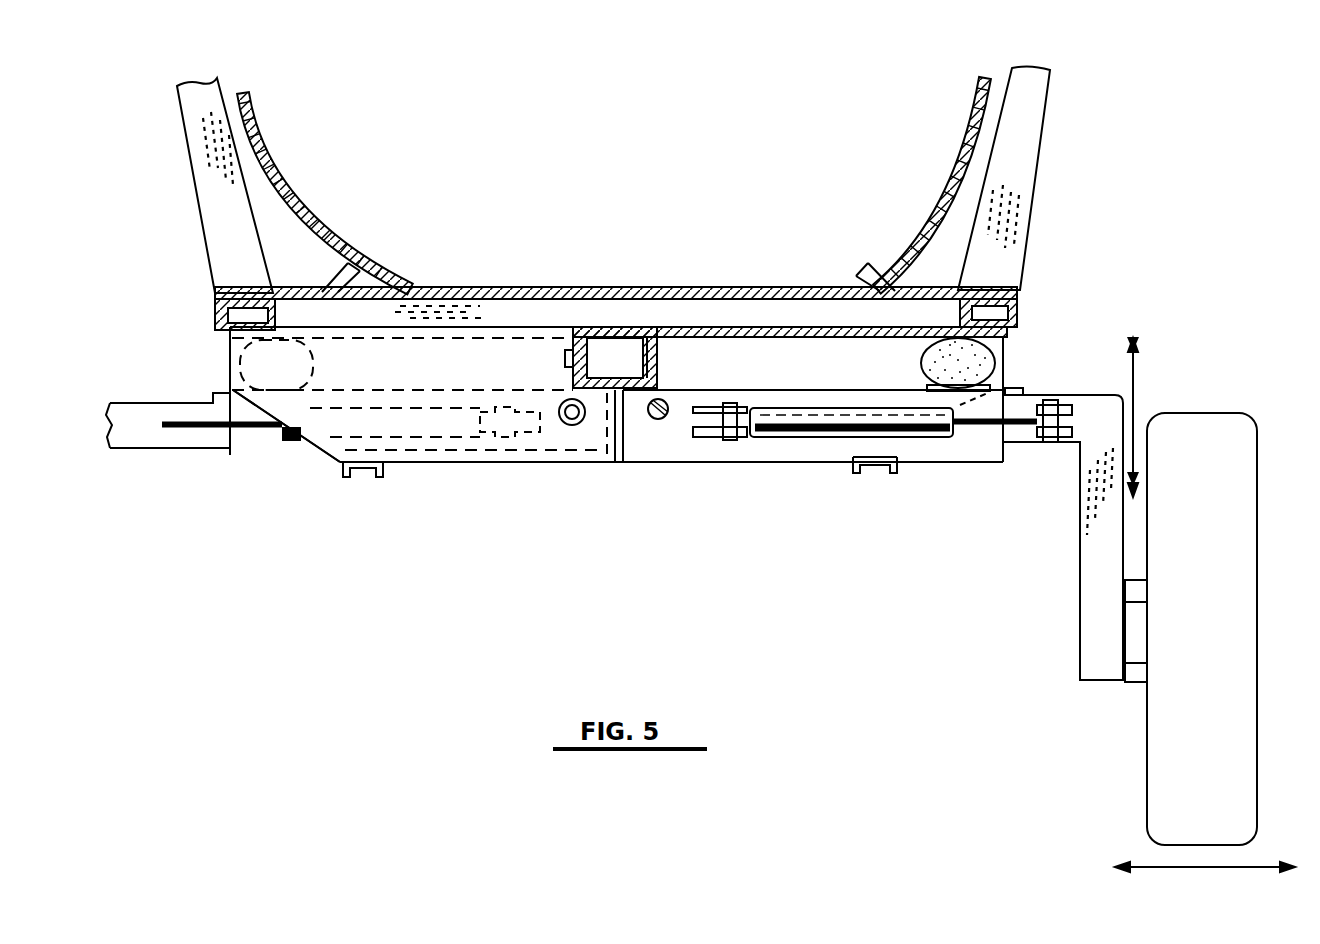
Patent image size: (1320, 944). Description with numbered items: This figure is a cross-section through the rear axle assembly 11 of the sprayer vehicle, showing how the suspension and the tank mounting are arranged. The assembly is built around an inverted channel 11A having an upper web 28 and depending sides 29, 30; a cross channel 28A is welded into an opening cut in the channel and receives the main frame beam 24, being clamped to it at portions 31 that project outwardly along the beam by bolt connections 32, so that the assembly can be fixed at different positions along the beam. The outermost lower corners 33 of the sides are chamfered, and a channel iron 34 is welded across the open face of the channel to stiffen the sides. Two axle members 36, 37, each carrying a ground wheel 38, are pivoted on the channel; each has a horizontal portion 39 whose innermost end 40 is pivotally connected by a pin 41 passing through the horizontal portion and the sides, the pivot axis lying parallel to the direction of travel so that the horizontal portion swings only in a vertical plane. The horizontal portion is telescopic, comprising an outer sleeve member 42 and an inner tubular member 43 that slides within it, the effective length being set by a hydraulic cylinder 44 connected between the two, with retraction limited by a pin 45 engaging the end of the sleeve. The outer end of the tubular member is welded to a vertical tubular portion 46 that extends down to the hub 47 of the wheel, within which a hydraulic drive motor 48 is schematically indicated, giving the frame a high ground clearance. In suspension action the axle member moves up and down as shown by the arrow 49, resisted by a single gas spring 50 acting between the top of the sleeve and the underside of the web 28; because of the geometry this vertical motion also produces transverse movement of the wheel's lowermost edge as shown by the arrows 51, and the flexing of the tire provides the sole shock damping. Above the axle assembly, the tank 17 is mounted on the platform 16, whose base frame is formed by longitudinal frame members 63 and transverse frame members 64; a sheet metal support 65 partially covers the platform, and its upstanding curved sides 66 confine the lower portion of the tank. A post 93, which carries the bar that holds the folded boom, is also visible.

The rear axle assembly 11 is at (711, 540).
The inverted channel 11A is at (417, 469).
The platform 16 is at (1022, 280).
The tank 17 is at (990, 92).
The beam 24 is at (610, 327).
The upper web 28 is at (716, 325).
The cross channel 28A is at (657, 360).
The side 29 is at (827, 348).
The side 30 is at (450, 445).
The portions 31 is at (565, 352).
The bolt connections 32 is at (565, 362).
The lower corners 33 is at (300, 450).
The channel iron 34 is at (862, 473).
The axle member 36 is at (1003, 448).
The axle member 37 is at (224, 463).
The ground wheel 38 is at (1224, 442).
The horizontal portion 39 is at (977, 462).
The innermost end 40 is at (640, 437).
The pin 41 is at (572, 427).
The outer sleeve member 42 is at (770, 462).
The inner tubular member 43 is at (1057, 395).
The hydraulic cylinder 44 is at (387, 422).
The pin 45 is at (1017, 388).
The vertical tubular portion 46 is at (1099, 549).
The hub 47 is at (1137, 678).
The hydraulic motor 48 is at (1137, 628).
The arrow 49 is at (1137, 395).
The gas spring 50 is at (922, 358).
The arrows 51 is at (1154, 866).
The longitudinal frame members 63 is at (222, 332).
The transverse frame members 64 is at (516, 290).
The sheet metal support 65 is at (215, 297).
The curved sides 66 is at (283, 210).
The post 93 is at (190, 137).